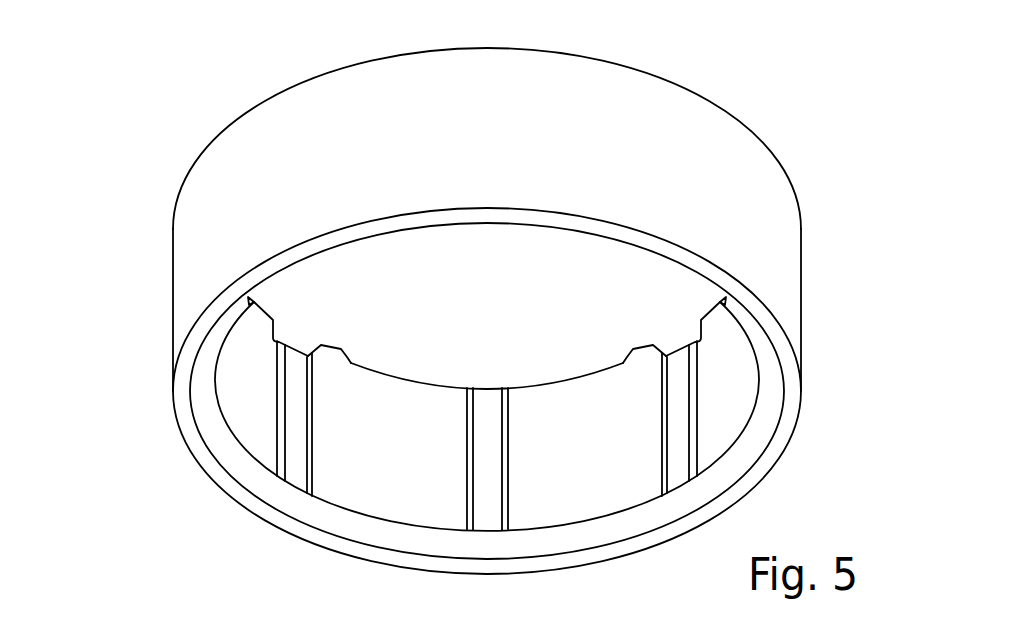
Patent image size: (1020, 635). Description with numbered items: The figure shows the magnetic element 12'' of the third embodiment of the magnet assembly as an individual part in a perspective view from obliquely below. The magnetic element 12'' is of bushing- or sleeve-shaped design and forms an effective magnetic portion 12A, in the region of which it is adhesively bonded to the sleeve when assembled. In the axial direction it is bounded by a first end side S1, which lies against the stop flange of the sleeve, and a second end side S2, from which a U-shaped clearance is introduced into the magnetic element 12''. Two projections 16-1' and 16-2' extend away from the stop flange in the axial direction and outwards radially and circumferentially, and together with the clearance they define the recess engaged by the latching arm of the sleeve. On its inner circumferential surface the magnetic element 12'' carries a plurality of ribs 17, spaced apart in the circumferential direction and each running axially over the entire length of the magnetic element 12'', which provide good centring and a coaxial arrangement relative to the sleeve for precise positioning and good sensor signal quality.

The magnetic element 12'' is at (463, 291).
The effective magnetic portion 12A is at (145, 273).
The first end side S1 is at (181, 442).
The second end side S2 is at (434, 350).
The projection 16-1' is at (487, 310).
The projection 16-2' is at (603, 294).
The ribs 17 is at (300, 414).